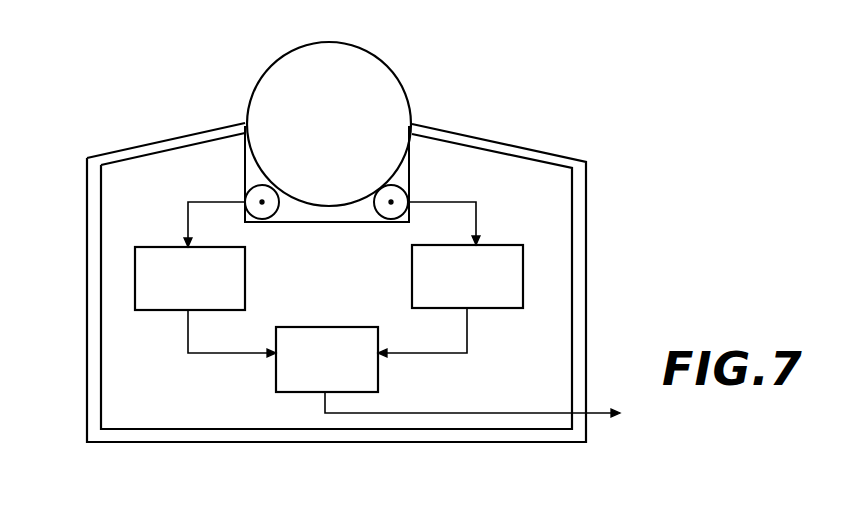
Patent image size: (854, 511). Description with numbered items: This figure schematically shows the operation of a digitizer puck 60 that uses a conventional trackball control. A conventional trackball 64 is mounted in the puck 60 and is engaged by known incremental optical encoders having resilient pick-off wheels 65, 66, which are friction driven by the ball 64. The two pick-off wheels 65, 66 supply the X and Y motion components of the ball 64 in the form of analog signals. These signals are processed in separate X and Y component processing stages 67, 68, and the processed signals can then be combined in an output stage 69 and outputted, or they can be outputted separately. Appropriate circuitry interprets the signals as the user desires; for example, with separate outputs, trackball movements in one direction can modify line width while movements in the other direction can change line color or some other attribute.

The puck 60 is at (87, 158).
The trackball 64 is at (375, 72).
The pick-off wheel 65 is at (265, 212).
The pick-off wheel 66 is at (388, 217).
The X component processing 67 is at (143, 312).
The Y component processing 68 is at (525, 308).
The output combining stage 69 is at (360, 313).